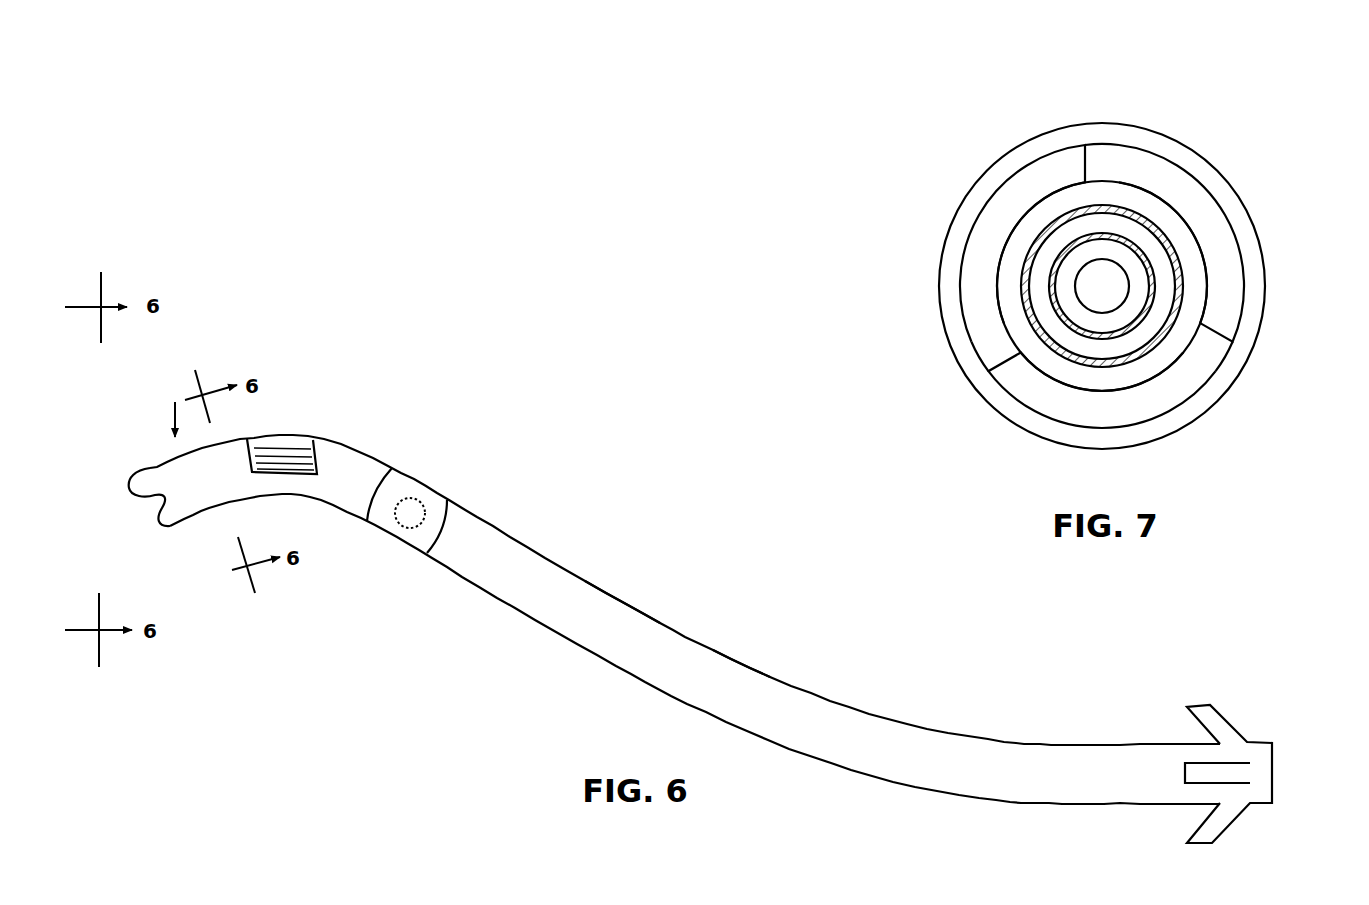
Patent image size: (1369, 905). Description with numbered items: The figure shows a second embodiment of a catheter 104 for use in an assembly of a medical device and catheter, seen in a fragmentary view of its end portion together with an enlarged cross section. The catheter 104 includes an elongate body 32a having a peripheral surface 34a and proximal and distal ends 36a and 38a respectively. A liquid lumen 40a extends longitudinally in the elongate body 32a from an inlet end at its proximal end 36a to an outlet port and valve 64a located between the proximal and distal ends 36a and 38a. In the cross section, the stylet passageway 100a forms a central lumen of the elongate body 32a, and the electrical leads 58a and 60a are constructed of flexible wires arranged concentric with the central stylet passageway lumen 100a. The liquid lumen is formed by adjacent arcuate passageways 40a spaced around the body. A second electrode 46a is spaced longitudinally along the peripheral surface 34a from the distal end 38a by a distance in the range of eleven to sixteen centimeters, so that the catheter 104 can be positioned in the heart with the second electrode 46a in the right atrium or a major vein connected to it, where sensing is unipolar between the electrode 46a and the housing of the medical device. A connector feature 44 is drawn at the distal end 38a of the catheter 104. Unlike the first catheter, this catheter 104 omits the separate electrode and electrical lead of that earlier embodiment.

In FIG. 6, the elongate body 32a is at (530, 558).
In FIG. 7, the elongate body 32a is at (1262, 325).
In FIG. 6, the peripheral surface 34a is at (618, 595).
In FIG. 7, the peripheral surface 34a is at (1250, 217).
In FIG. 6, the proximal end 36a is at (124, 499).
In FIG. 6, the distal end 38a is at (1235, 754).
In FIG. 7, the liquid lumen 40a is at (1203, 200).
In FIG. 6, the connector slot 44 is at (1278, 772).
In FIG. 6, the second electrode 46a is at (297, 443).
In FIG. 7, the electrical lead 58a is at (1070, 335).
In FIG. 7, the electrical lead 60a is at (1025, 300).
In FIG. 6, the outlet port and valve 64a is at (435, 488).
In FIG. 7, the stylet passageway 100a is at (1103, 283).
In FIG. 6, the catheter 104 is at (740, 660).
In FIG. 7, the catheter 104 is at (1102, 225).